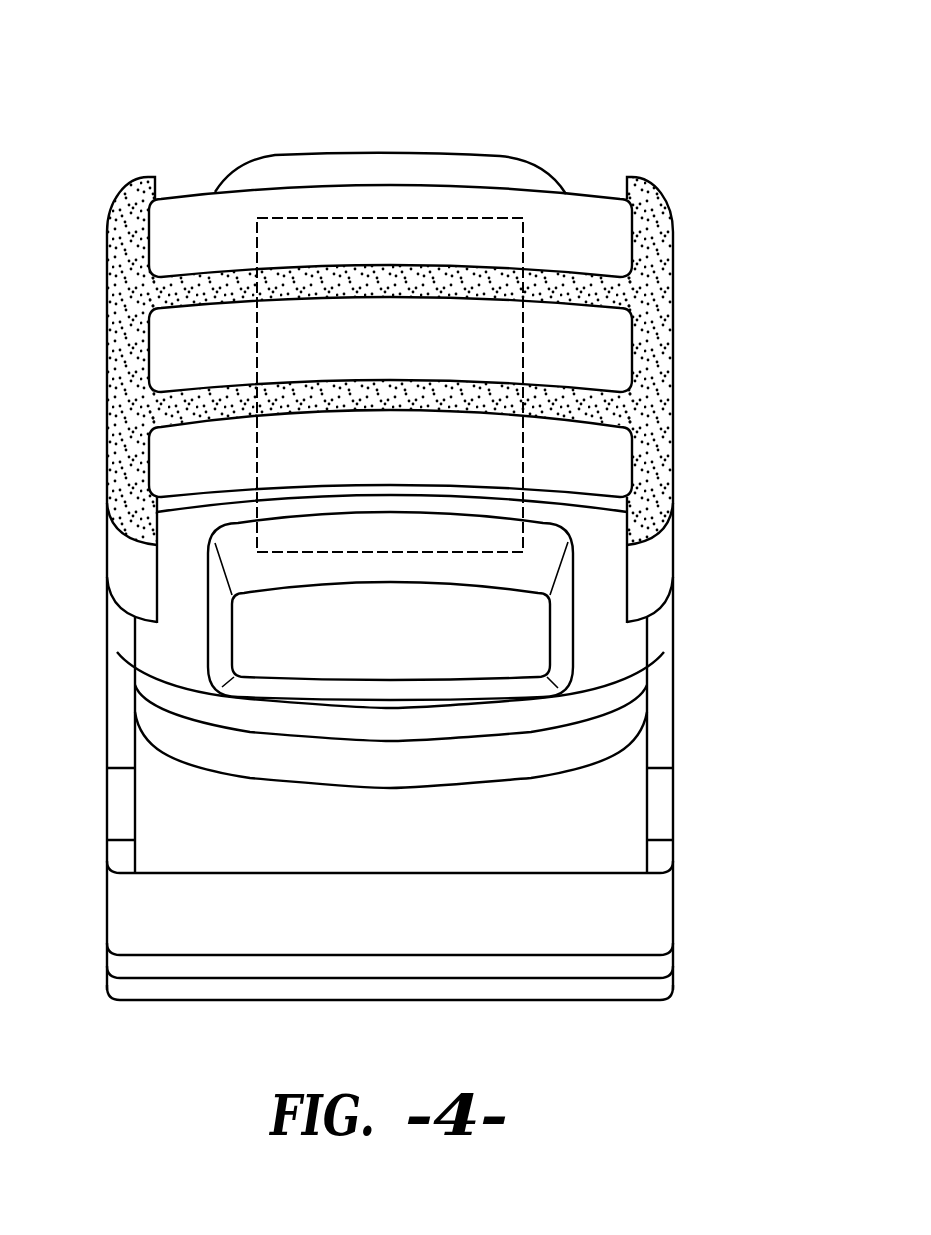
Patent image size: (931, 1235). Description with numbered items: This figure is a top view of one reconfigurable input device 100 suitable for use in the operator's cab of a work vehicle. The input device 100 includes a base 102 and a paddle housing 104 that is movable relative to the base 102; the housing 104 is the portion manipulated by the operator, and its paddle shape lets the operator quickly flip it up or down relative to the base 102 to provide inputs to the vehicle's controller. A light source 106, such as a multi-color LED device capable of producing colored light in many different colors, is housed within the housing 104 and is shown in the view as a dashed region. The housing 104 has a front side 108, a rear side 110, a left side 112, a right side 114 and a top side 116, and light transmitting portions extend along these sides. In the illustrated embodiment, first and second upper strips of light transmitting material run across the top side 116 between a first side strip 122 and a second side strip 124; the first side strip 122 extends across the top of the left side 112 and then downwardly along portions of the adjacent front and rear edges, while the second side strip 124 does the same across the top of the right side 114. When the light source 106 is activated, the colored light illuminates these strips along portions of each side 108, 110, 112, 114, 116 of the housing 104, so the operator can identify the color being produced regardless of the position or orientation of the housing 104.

The reconfigurable input device 100 is at (392, 534).
The base 102 is at (525, 925).
The paddle housing 104 is at (160, 643).
The light source 106 is at (392, 218).
The front side 108 is at (448, 655).
The rear side 110 is at (246, 164).
The left side 112 is at (108, 423).
The right side 114 is at (672, 425).
The top side 116 is at (590, 212).
The first side strip 122 is at (130, 337).
The second side strip 124 is at (658, 336).